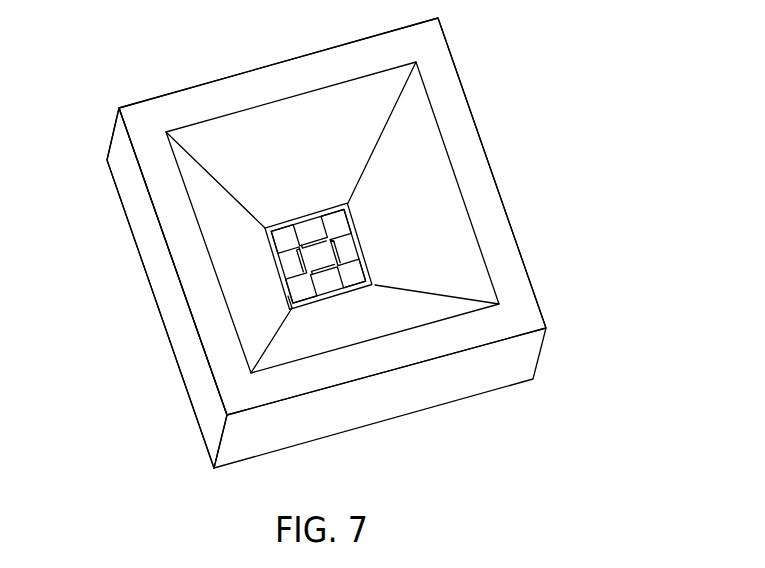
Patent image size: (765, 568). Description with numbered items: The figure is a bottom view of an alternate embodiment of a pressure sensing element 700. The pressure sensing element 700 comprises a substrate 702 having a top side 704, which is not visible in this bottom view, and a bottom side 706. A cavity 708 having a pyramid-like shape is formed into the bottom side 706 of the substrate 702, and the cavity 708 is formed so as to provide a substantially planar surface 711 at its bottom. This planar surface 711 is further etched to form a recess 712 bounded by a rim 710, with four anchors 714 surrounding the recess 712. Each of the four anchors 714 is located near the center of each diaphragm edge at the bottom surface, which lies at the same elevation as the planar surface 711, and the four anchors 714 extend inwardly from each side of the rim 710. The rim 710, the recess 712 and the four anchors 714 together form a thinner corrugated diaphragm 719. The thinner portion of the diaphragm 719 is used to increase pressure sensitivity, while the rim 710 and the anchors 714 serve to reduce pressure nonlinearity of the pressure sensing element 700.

The pressure sensing element 700 is at (543, 55).
The substrate 702 is at (465, 86).
The top side 704 is at (152, 302).
The bottom side 706 is at (498, 202).
The cavity 708 is at (400, 308).
The rim 710 is at (297, 309).
The planar surface 711 is at (336, 206).
The recess 712 is at (292, 304).
The anchors 714 is at (309, 218).
The corrugated diaphragm 719 is at (333, 258).